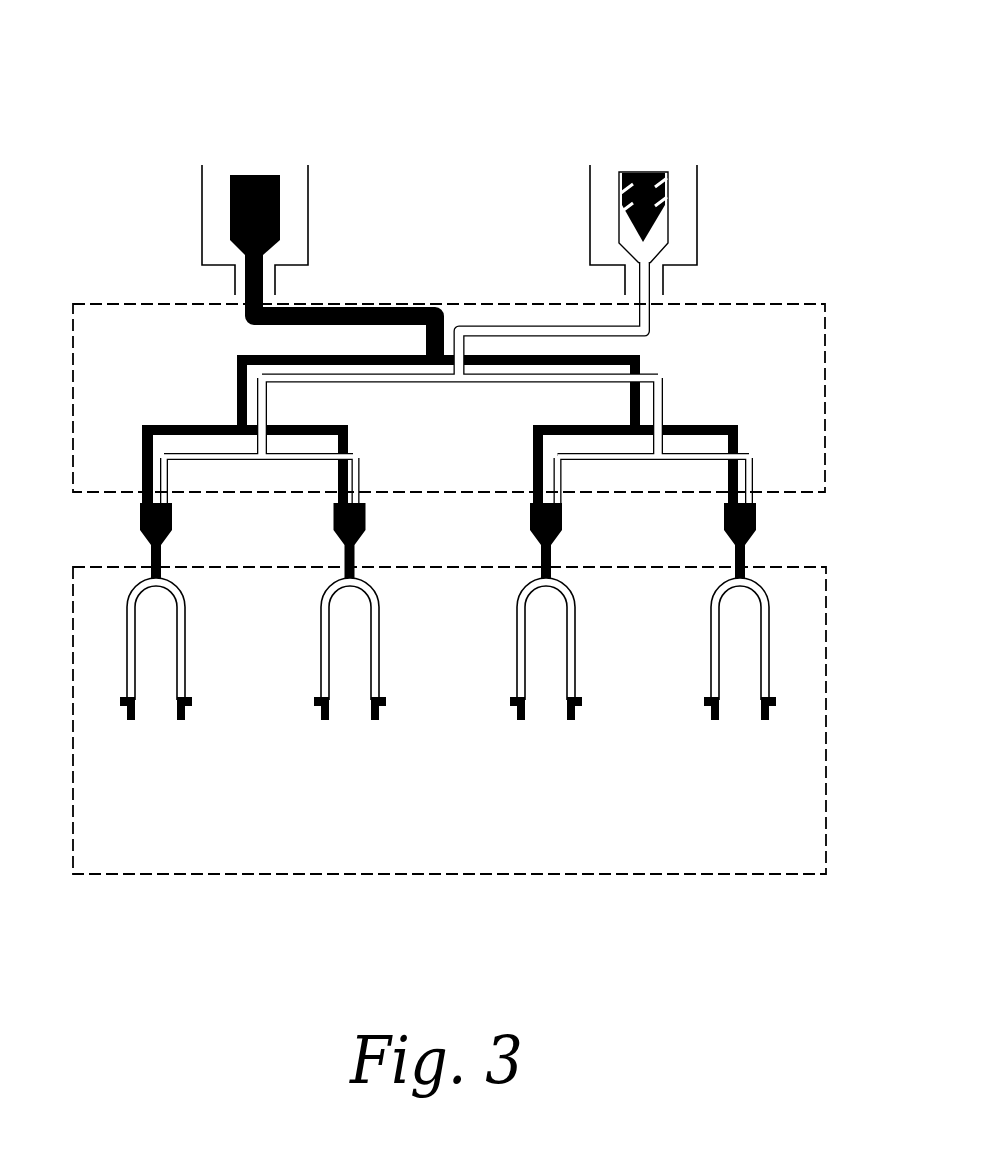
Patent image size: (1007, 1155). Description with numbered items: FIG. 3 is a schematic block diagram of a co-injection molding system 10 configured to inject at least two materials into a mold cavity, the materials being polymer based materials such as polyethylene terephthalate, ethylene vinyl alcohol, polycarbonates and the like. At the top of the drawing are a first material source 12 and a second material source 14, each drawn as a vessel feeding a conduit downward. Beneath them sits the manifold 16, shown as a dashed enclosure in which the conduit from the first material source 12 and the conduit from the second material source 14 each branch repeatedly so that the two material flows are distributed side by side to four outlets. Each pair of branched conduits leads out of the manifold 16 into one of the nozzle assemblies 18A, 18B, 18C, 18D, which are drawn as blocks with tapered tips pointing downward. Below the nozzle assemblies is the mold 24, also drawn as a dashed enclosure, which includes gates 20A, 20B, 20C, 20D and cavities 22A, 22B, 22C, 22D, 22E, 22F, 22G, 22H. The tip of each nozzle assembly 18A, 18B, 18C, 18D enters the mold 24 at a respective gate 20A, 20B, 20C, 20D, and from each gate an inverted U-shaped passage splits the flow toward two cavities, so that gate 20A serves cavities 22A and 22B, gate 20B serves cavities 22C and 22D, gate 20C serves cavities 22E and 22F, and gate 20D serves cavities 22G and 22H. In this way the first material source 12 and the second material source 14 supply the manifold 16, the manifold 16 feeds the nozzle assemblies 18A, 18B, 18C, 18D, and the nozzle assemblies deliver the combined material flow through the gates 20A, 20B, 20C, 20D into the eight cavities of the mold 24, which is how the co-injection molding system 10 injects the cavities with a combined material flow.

The co-injection molding system 10 is at (205, 64).
The first material source 12 is at (308, 221).
The second material source 14 is at (697, 250).
The manifold 16 is at (825, 420).
The nozzle assembly 18A is at (172, 515).
The nozzle assembly 18B is at (366, 515).
The nozzle assembly 18C is at (562, 515).
The nozzle assembly 18D is at (757, 515).
The gate 20A is at (147, 572).
The gate 20B is at (340, 572).
The gate 20C is at (540, 573).
The gate 20D is at (735, 573).
The cavity 22A is at (125, 713).
The cavity 22B is at (186, 720).
The cavity 22C is at (320, 713).
The cavity 22D is at (380, 720).
The cavity 22E is at (516, 712).
The cavity 22F is at (576, 720).
The cavity 22G is at (708, 715).
The cavity 22H is at (762, 720).
The mold 24 is at (478, 874).